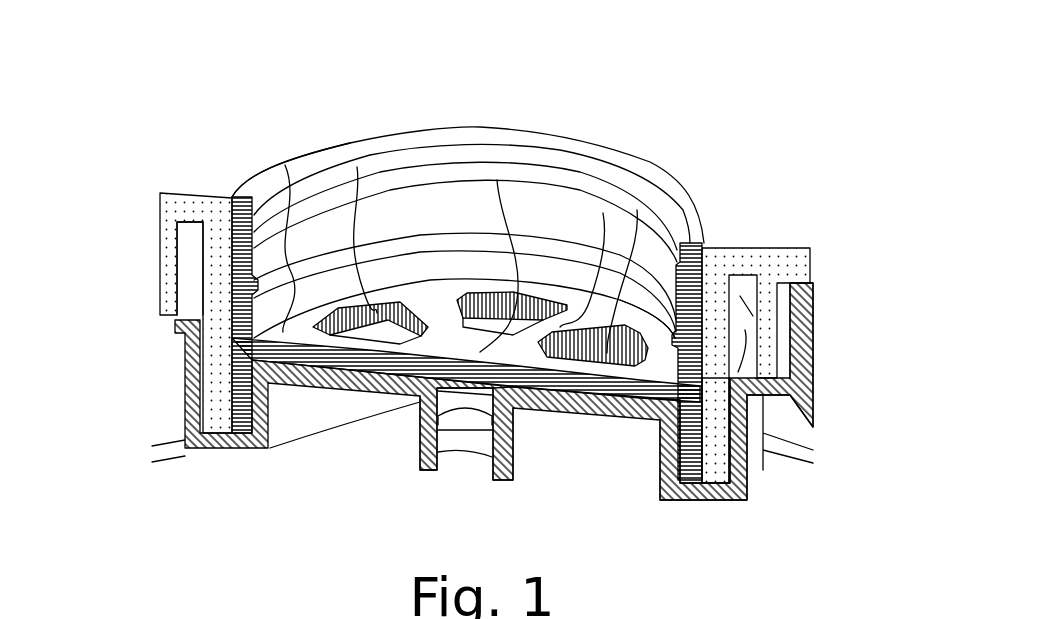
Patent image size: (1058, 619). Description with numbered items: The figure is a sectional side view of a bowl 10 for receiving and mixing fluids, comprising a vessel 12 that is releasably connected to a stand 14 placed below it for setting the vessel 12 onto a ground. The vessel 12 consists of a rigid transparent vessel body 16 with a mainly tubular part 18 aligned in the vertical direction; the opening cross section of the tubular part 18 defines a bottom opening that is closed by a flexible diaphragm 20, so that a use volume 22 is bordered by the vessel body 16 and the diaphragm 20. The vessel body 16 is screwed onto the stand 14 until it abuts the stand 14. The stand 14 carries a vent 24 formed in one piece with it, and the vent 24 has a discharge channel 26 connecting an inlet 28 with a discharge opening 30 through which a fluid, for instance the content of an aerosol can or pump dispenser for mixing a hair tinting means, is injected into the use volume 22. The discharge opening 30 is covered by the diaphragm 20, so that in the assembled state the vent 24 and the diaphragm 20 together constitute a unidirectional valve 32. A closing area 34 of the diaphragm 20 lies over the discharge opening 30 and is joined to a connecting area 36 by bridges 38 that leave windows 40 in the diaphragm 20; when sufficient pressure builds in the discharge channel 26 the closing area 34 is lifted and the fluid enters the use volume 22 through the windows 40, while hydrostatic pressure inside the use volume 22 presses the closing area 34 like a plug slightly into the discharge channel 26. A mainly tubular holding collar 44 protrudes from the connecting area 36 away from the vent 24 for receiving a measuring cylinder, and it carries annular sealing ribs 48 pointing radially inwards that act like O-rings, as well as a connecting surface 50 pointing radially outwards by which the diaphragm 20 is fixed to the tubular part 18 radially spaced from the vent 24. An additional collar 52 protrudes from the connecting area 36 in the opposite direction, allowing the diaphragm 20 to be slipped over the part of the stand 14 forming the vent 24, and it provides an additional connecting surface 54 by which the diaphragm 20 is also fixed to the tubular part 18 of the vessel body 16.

The bowl 10 is at (312, 118).
The vessel 12 is at (728, 236).
The stand 14 is at (662, 472).
The vessel body 16 is at (163, 193).
The tubular part 18 is at (215, 255).
The flexible diaphragm 20 is at (383, 375).
The use volume 22 is at (578, 120).
The vent 24 is at (510, 443).
The discharge channel 26 is at (440, 435).
The inlet 28 is at (472, 462).
The discharge opening 30 is at (410, 413).
The unidirectional valve 32 is at (519, 406).
The closing area 34 is at (388, 330).
The connecting area 36 is at (292, 200).
The bridges 38 is at (357, 167).
The windows 40 is at (285, 165).
The holding collar 44 is at (657, 255).
The annular sealing ribs 48 is at (265, 207).
The connecting surface 50 is at (706, 318).
The additional collar 52 is at (715, 425).
The additional connecting surface 54 is at (748, 471).